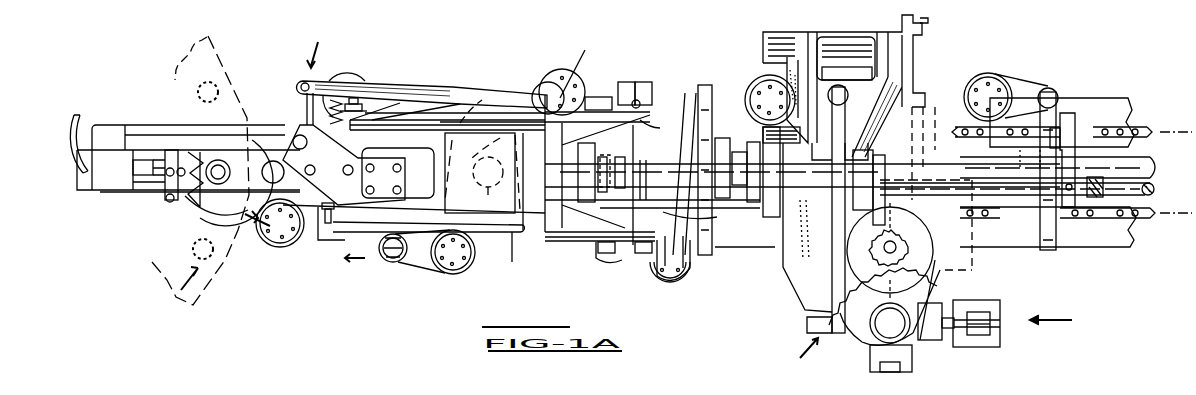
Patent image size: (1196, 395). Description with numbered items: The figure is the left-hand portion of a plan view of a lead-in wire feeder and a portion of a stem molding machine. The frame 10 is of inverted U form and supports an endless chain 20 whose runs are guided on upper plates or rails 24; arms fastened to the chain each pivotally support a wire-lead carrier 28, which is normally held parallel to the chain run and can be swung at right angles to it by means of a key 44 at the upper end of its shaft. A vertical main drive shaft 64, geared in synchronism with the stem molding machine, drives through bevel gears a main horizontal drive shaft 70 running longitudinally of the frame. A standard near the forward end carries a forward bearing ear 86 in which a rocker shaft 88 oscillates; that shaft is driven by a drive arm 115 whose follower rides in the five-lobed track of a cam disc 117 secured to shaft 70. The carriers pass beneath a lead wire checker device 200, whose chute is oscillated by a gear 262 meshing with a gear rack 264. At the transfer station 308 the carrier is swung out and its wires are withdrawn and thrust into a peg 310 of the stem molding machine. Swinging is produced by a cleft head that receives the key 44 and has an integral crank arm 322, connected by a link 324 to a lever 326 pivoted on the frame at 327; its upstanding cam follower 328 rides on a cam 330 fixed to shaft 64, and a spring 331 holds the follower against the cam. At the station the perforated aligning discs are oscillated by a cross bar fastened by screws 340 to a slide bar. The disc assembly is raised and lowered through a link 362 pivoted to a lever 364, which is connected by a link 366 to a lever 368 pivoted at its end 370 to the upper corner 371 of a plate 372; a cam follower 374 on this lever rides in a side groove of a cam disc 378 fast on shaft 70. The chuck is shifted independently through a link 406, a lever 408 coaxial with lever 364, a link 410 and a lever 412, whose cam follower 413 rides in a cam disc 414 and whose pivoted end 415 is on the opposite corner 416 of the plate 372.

The frame 10 is at (735, 238).
The endless chain 20 is at (1145, 125).
The upper plates or rails 24 is at (1088, 128).
The wire-lead carrier 28 is at (445, 271).
The key 44 is at (393, 262).
The main drive shaft 64 is at (482, 173).
The main horizontal drive shaft 70 is at (1150, 188).
The forward bearing ear 86 is at (867, 166).
The rocker shaft 88 is at (1090, 198).
The drive arm 115 is at (1068, 113).
The cam disc 117 is at (1042, 252).
The lead wire checker device 200 is at (793, 362).
The gear 262 is at (903, 240).
The gear rack 264 is at (845, 332).
The transfer station 308 is at (295, 246).
The peg 310 is at (193, 249).
The crank arm 322 is at (300, 158).
The link 324 is at (307, 103).
The lever 326 is at (458, 95).
The pivot 327 is at (581, 68).
The cam follower 328 is at (492, 104).
The cam 330 is at (553, 86).
The spring 331 is at (352, 102).
The screws 340 is at (175, 200).
The link 362 is at (365, 106).
The lever 364 is at (592, 106).
The link 366 is at (688, 93).
The lever 368 is at (683, 132).
The pivoted end 370 is at (685, 265).
The upper corner 371 is at (670, 278).
The plate 372 is at (650, 130).
The cam follower 374 is at (737, 146).
The cam disc 378 is at (706, 85).
The link 406 is at (341, 232).
The lever 408 is at (527, 254).
The link 410 is at (646, 254).
The lever 412 is at (623, 170).
The cam follower 413 is at (608, 137).
The cam disc 414 is at (600, 252).
The pivoted end 415 is at (628, 82).
The corner 416 is at (645, 84).